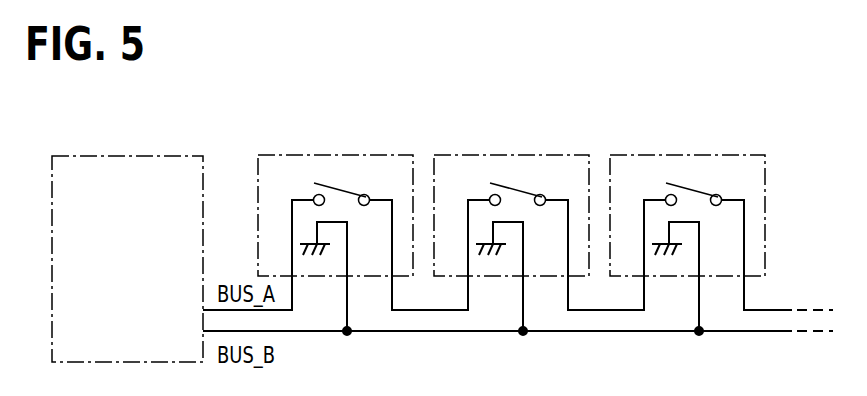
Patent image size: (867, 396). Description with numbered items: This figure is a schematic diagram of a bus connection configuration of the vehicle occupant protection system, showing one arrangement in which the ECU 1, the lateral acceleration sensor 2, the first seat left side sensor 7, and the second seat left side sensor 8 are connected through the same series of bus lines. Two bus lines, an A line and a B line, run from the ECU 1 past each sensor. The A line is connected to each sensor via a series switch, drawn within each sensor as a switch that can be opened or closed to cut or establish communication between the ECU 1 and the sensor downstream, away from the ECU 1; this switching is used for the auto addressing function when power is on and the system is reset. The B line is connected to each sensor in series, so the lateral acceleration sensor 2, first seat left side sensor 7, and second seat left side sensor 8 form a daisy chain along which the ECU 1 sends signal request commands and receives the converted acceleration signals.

The ECU 1 is at (127, 259).
The lateral acceleration sensor 2 is at (312, 155).
The first seat left side sensor 7 is at (509, 155).
The second seat left side sensor 8 is at (682, 155).